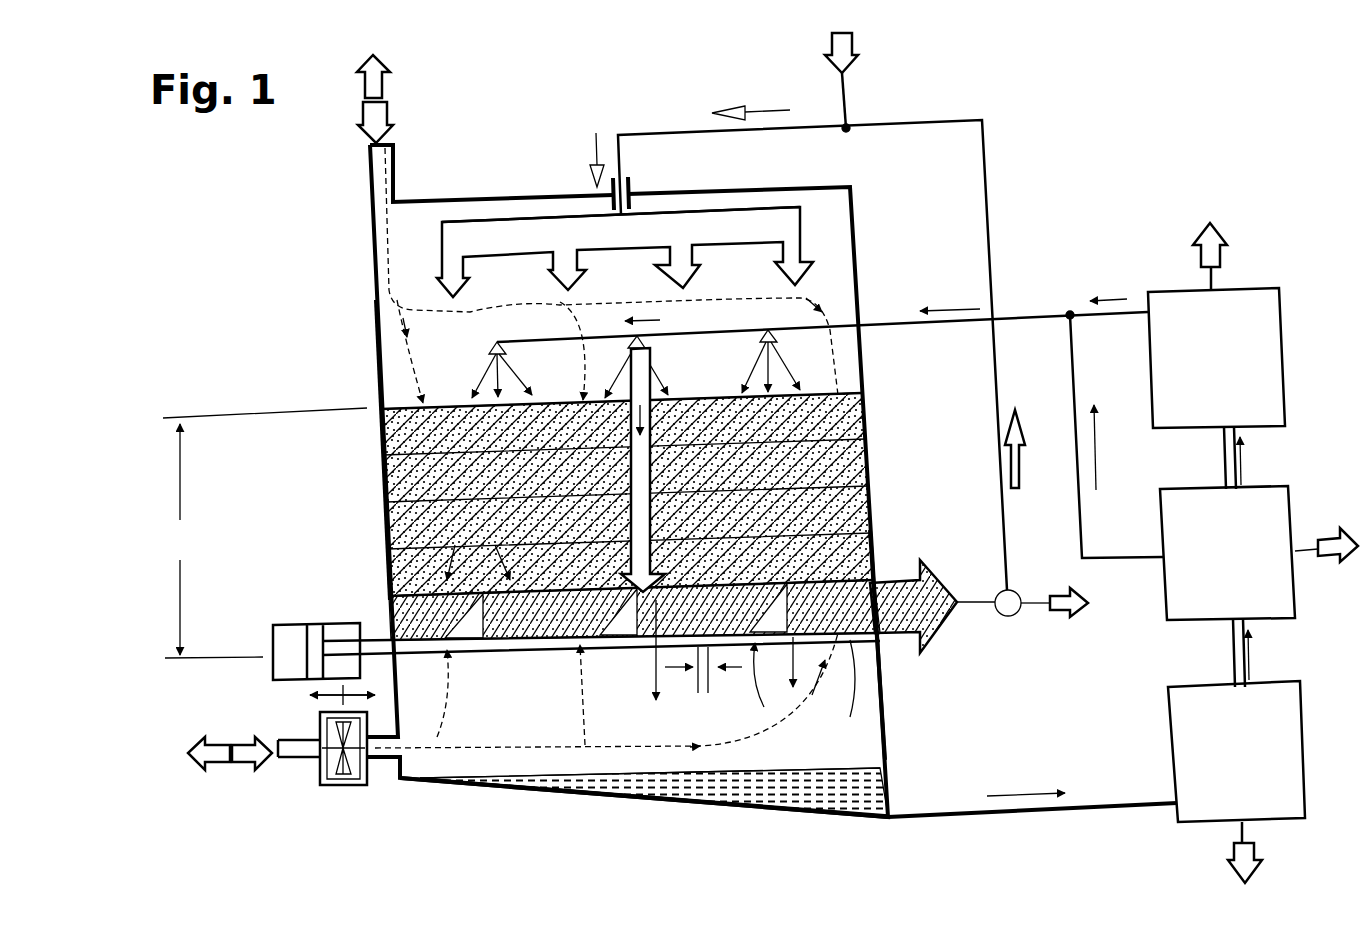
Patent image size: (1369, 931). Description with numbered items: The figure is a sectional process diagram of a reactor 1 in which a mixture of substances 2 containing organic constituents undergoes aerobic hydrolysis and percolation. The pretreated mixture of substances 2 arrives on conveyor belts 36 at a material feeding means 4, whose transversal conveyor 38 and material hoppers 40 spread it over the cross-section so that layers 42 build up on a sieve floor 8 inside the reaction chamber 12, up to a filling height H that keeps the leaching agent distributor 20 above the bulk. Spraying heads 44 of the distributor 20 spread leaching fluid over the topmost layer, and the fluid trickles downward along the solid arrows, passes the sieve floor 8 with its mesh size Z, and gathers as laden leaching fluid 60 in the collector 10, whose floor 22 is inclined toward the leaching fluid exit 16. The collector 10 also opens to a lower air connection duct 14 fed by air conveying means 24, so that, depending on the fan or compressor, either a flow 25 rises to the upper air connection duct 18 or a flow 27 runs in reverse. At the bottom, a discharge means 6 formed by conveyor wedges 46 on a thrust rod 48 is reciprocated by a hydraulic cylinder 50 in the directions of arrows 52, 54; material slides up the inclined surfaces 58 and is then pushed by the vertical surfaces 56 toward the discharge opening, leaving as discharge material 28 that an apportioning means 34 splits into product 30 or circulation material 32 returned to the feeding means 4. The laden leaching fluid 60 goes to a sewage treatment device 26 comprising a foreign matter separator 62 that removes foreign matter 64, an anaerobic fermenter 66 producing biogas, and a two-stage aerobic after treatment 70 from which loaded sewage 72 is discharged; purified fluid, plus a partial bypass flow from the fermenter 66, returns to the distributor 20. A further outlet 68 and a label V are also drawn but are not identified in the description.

The reactor 1 is at (858, 198).
The mixture of substances 2 is at (855, 45).
The material feeding means 4 is at (562, 198).
The discharge means 6 is at (766, 690).
The sieve floor 8 is at (850, 699).
The collector 10 is at (876, 720).
The reaction chamber 12 is at (380, 347).
The air connection duct 14 is at (400, 762).
The leaching fluid exit 16 is at (892, 820).
The air connection duct 18 is at (372, 182).
The leaching agent distributor 20 is at (711, 325).
The floor 22 is at (615, 795).
The air conveying means 24 is at (345, 787).
The flow 25 is at (377, 82).
The sewage treatment device 26 is at (1282, 282).
The flow 27 is at (378, 117).
The discharge material 28 is at (926, 563).
The product 30 is at (1065, 612).
The circulation material 32 is at (1003, 463).
The apportioning means 34 is at (1010, 617).
The conveyor belts 36 is at (645, 132).
The transversal conveyor 38 is at (520, 230).
The material hoppers 40 is at (905, 263).
The layers 42 is at (395, 436).
The spraying heads 44 is at (489, 350).
The conveyor wedges 46 is at (623, 632).
The thrust rod 48 is at (530, 600).
The hydraulic cylinder 50 is at (313, 623).
The arrow 52 is at (459, 546).
The arrow 54 is at (501, 546).
The vertical surfaces 56 is at (495, 645).
The inclined surfaces 58 is at (393, 637).
The laden leaching fluid 60 is at (997, 780).
The foreign matter separator 62 is at (1275, 752).
The foreign matter 64 is at (1233, 860).
The anaerobic fermenter 66 is at (1273, 530).
The product outlet 68 is at (1338, 565).
The two-stage aerobic after treatment 70 is at (1255, 383).
The loaded sewage 72 is at (1205, 258).
The flow velocity V is at (652, 462).
The filling height H is at (265, 533).
The mesh size Z is at (703, 690).